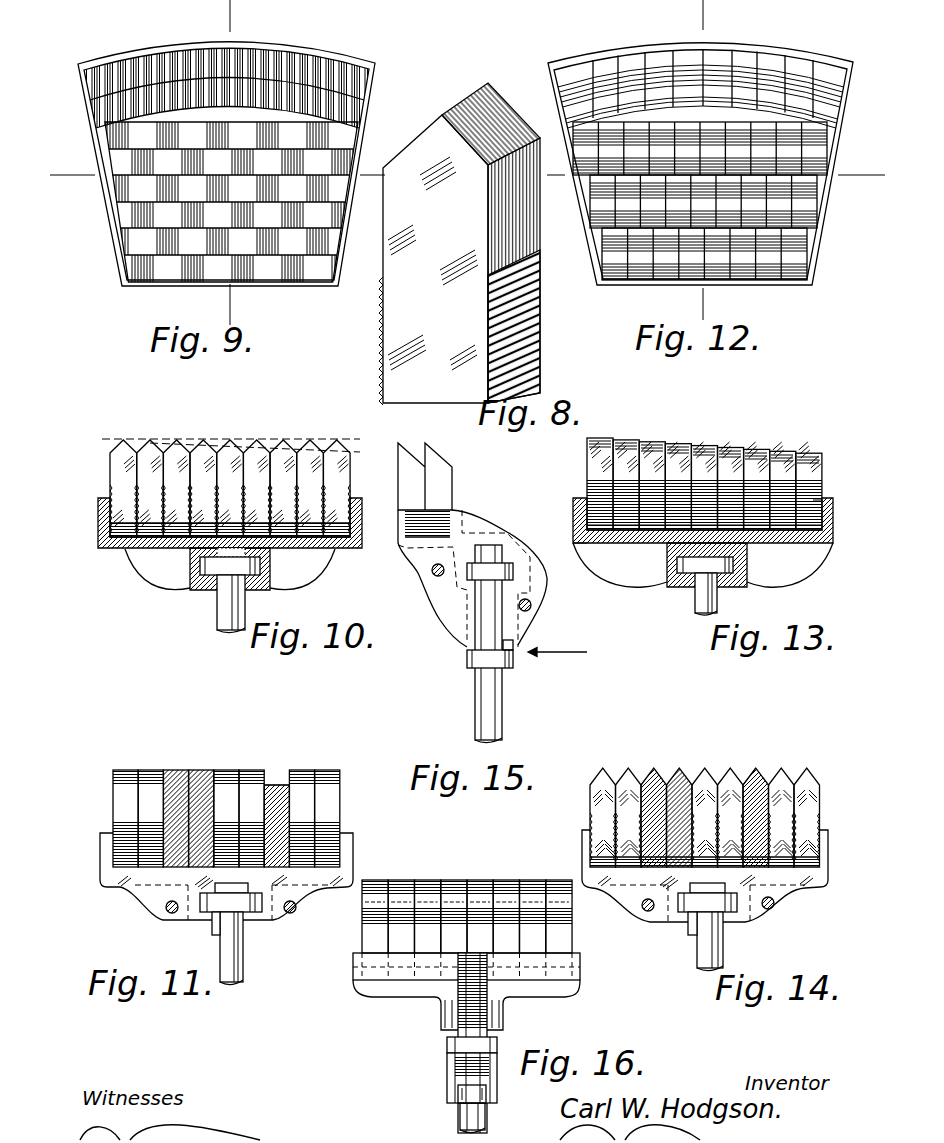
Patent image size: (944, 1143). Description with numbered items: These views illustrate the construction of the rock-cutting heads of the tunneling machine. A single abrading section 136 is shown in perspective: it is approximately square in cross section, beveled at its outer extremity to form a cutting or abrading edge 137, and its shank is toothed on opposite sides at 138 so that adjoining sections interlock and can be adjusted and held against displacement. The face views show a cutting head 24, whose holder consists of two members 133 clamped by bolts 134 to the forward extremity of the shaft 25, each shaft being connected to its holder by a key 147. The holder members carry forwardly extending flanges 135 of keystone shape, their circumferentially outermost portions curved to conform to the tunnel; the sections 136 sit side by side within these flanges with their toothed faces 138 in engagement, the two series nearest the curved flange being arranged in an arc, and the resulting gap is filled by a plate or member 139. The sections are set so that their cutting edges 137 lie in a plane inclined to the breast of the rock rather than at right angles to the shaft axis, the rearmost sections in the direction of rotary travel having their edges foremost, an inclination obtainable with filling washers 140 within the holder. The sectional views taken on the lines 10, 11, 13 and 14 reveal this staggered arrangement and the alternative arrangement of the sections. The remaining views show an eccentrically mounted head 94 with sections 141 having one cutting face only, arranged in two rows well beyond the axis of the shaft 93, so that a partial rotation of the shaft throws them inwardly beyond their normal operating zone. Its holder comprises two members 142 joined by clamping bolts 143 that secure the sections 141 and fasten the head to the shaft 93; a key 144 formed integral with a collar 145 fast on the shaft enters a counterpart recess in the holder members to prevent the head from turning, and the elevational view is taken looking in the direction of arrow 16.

In FIG. 9, the section line 10- 10 is at (222, 176).
In FIG. 9, the section line 11- 11 is at (270, 310).
In FIG. 12, the section line 13- 13 is at (716, 176).
In FIG. 12, the section line 14- 14 is at (709, 160).
In FIG. 15, the arrow 16 is at (557, 640).
In FIG. 9, the cutting head 24 is at (226, 150).
In FIG. 12, the cutting head 24 is at (700, 150).
In FIG. 10, the cutting head 24 is at (213, 443).
In FIG. 13, the cutting head 24 is at (704, 433).
In FIG. 11, the cutting head 24 is at (203, 818).
In FIG. 14, the cutting head 24 is at (732, 817).
In FIG. 10, the shaft 25 is at (215, 622).
In FIG. 13, the shaft 25 is at (695, 602).
In FIG. 11, the shaft 25 is at (242, 962).
In FIG. 14, the shaft 25 is at (727, 938).
In FIG. 15, the shaft 93 is at (503, 710).
In FIG. 16, the shaft 93 is at (462, 1118).
In FIG. 15, the eccentrically mounted head 94 is at (472, 574).
In FIG. 16, the eccentrically mounted head 94 is at (466, 938).
In FIG. 10, the holder member 133 is at (293, 552).
In FIG. 13, the holder member 133 is at (773, 547).
In FIG. 11, the holder member 133 is at (279, 918).
In FIG. 14, the holder member 133 is at (705, 876).
In FIG. 11, the bolt 134 is at (294, 912).
In FIG. 14, the bolt 134 is at (776, 903).
In FIG. 9, the flange 135 is at (108, 215).
In FIG. 12, the flange 135 is at (822, 238).
In FIG. 10, the flange 135 is at (360, 517).
In FIG. 13, the flange 135 is at (836, 512).
In FIG. 9, the cutting or abrading section 136 is at (162, 247).
In FIG. 8, the cutting or abrading section 136 is at (461, 259).
In FIG. 12, the cutting or abrading section 136 is at (750, 56).
In FIG. 10, the cutting or abrading section 136 is at (203, 458).
In FIG. 13, the cutting or abrading section 136 is at (782, 468).
In FIG. 8, the cutting or abrading edge 137 is at (463, 95).
In FIG. 10, the cutting or abrading edge 137 is at (305, 460).
In FIG. 13, the cutting or abrading edge 137 is at (724, 447).
In FIG. 8, the toothed face 138 is at (541, 333).
In FIG. 13, the toothed face 138 is at (813, 500).
In FIG. 9, the plate or member 139 is at (197, 115).
In FIG. 12, the plate or member 139 is at (700, 189).
In FIG. 11, the plate or member 139 is at (278, 780).
In FIG. 14, the plate or member 139 is at (757, 783).
In FIG. 10, the filling washer 140 is at (155, 547).
In FIG. 13, the filling washer 140 is at (655, 538).
In FIG. 15, the section 141 is at (443, 497).
In FIG. 16, the section 141 is at (400, 942).
In FIG. 15, the holder member 142 is at (455, 612).
In FIG. 15, the clamping bolt 143 is at (533, 605).
In FIG. 13, the clamping bolt 143 is at (628, 550).
In FIG. 16, the clamping bolt 143 is at (447, 1042).
In FIG. 15, the key 144 is at (512, 650).
In FIG. 16, the key 144 is at (470, 1080).
In FIG. 16, the collar 145 is at (456, 1093).
In FIG. 11, the key 147 is at (212, 928).
In FIG. 14, the key 147 is at (687, 932).